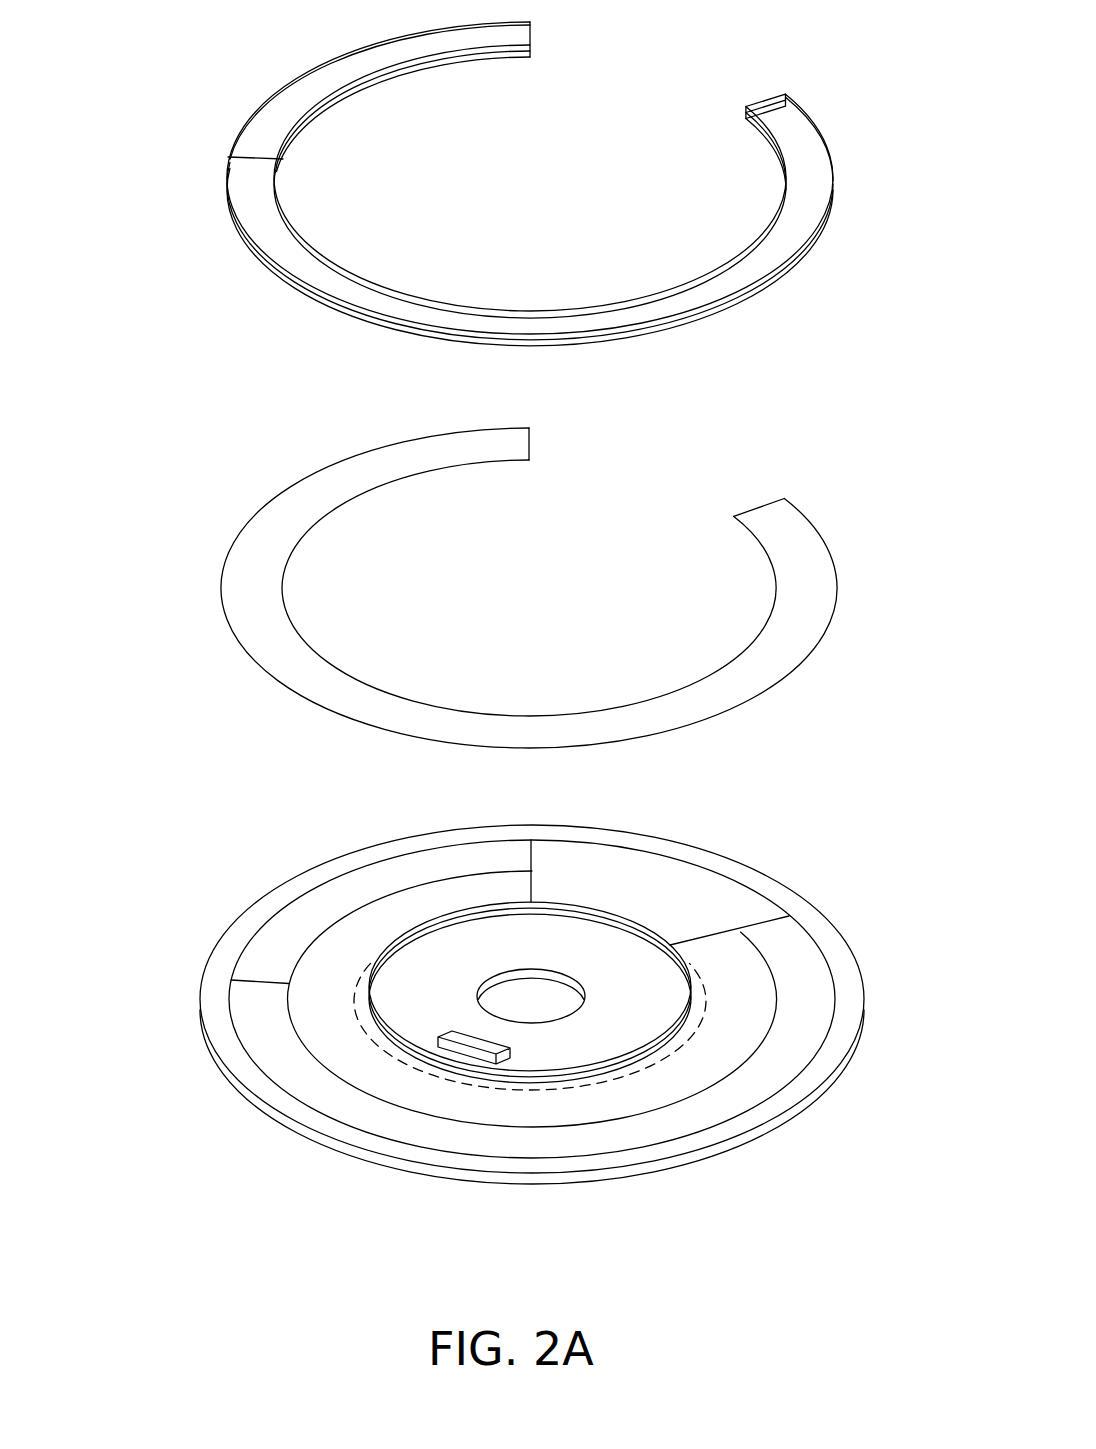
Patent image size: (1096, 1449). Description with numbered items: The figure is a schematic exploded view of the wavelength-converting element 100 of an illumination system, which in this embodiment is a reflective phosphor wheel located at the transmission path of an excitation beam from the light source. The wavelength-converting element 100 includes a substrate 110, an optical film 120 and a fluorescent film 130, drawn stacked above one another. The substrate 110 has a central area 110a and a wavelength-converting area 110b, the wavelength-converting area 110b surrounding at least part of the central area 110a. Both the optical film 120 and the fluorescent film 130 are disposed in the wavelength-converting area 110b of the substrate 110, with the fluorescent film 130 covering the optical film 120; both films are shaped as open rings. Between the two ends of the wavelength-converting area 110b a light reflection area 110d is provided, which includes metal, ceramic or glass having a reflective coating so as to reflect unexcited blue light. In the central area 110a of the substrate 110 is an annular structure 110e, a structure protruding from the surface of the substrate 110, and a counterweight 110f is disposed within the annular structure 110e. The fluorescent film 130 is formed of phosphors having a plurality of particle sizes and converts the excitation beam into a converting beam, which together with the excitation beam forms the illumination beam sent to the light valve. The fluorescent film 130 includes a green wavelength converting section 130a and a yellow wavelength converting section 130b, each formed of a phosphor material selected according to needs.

The wavelength-converting element 100 is at (821, 48).
The substrate 110 is at (680, 1240).
The central area 110a is at (568, 1094).
The wavelength-converting area 110b is at (643, 1158).
The light reflection area 110d is at (647, 870).
The annular structure 110e is at (526, 1053).
The counterweight 110f is at (459, 1050).
The optical film 120 is at (232, 581).
The fluorescent film 130 is at (118, 90).
The green wavelength converting section 130a is at (270, 142).
The yellow wavelength converting section 130b is at (247, 188).